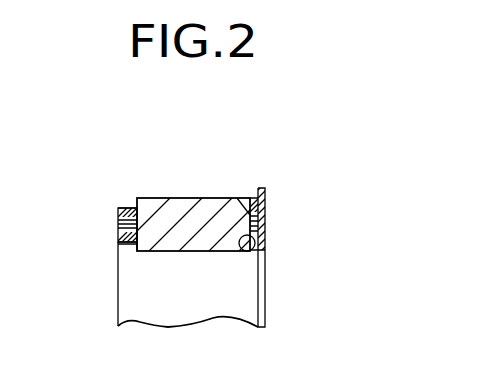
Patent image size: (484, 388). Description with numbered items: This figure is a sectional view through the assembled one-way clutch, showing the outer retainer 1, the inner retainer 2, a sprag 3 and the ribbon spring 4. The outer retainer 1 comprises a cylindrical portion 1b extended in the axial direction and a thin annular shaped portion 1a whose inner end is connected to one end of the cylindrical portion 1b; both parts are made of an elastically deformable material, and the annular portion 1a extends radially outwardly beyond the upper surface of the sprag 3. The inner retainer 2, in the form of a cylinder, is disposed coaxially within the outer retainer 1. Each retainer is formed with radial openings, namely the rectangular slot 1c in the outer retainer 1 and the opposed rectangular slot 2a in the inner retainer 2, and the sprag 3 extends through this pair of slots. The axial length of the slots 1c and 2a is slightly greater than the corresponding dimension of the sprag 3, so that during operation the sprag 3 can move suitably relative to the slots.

The outer retainer 1 is at (118, 207).
The thin annular shaped portion 1a is at (260, 190).
The cylindrical portion 1b is at (119, 207).
The rectangular slot 1c is at (250, 213).
The inner retainer 2 is at (118, 246).
The rectangular slot 2a is at (250, 251).
The sprag 3 is at (164, 198).
The ribbon spring 4 is at (118, 225).